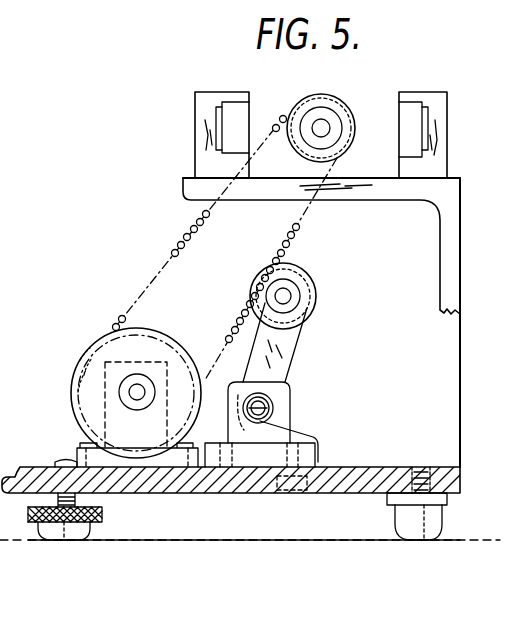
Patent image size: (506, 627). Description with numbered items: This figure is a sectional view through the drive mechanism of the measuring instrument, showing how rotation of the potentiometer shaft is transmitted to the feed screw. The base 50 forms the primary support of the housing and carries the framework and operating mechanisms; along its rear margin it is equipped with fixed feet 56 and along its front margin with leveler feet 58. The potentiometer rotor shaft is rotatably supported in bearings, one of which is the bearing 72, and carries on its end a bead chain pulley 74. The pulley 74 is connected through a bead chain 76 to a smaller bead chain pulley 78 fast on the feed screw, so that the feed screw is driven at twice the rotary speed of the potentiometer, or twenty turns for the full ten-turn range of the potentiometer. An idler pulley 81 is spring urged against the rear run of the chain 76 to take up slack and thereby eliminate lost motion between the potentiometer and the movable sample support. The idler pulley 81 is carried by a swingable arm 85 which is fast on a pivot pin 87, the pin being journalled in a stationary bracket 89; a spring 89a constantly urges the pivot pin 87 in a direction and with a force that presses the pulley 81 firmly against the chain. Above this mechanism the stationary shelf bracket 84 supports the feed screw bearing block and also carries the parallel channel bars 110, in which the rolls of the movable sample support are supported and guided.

The base 50 is at (157, 483).
The fixed feet 56 is at (403, 520).
The leveler feet 58 is at (90, 527).
The bearing 72 is at (106, 408).
The bead chain pulley 74 is at (170, 340).
The bead chain 76 is at (297, 231).
The bead chain pulley 78 is at (322, 106).
The idler pulley 81 is at (318, 296).
The shelf bracket 84 is at (446, 284).
The swingable arm 85 is at (295, 352).
The pivot pin 87 is at (262, 418).
The stationary bracket 89 is at (290, 393).
The spring 89a is at (318, 440).
The channel bars 110 is at (203, 121).